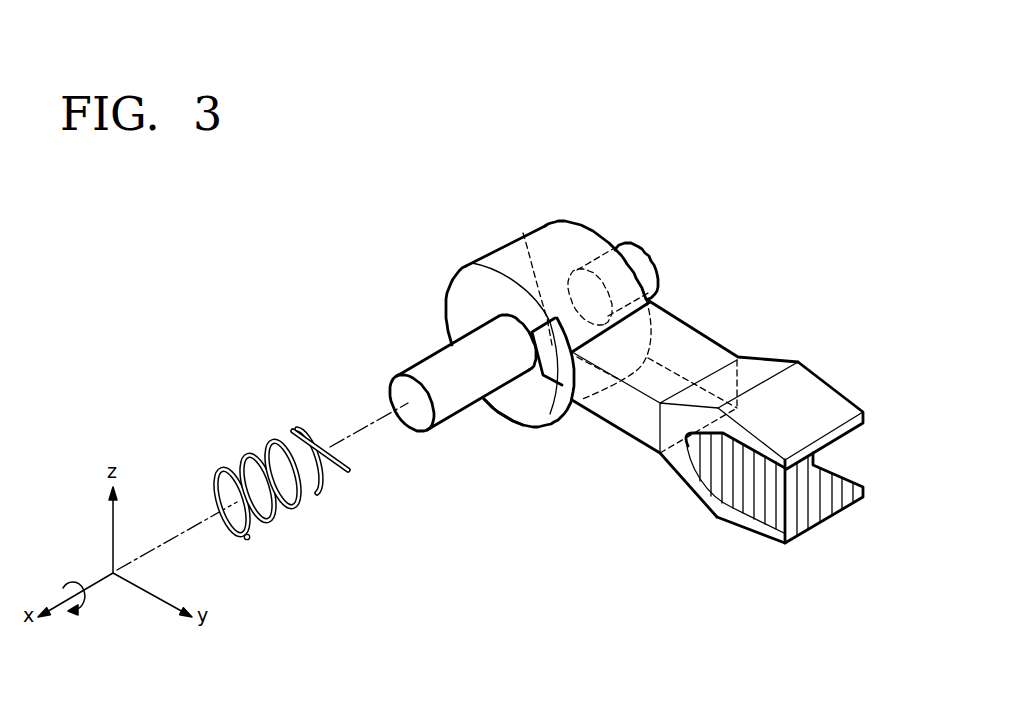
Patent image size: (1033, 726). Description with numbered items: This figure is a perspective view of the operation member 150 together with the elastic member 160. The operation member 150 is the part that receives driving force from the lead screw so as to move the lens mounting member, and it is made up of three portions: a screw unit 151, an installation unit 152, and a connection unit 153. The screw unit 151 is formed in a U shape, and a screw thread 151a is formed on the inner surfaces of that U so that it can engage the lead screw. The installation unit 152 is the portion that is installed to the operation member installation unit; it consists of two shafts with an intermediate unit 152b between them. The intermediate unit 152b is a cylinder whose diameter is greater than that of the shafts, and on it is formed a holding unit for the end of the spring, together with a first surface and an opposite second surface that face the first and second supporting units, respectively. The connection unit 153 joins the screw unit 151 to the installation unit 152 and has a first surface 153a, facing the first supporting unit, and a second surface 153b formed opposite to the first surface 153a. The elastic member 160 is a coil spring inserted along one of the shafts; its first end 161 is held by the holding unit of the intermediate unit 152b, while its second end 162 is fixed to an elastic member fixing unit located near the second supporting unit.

The operation member 150 is at (706, 236).
The screw unit 151 is at (830, 397).
The screw thread 151a is at (740, 497).
The installation unit 152 is at (505, 232).
The intermediate unit 152b is at (528, 238).
The connection unit 153 is at (673, 340).
The first surface 153a is at (717, 358).
The second surface 153b is at (623, 417).
The elastic member 160 is at (314, 531).
The first end 161 is at (350, 472).
The second end 162 is at (247, 541).